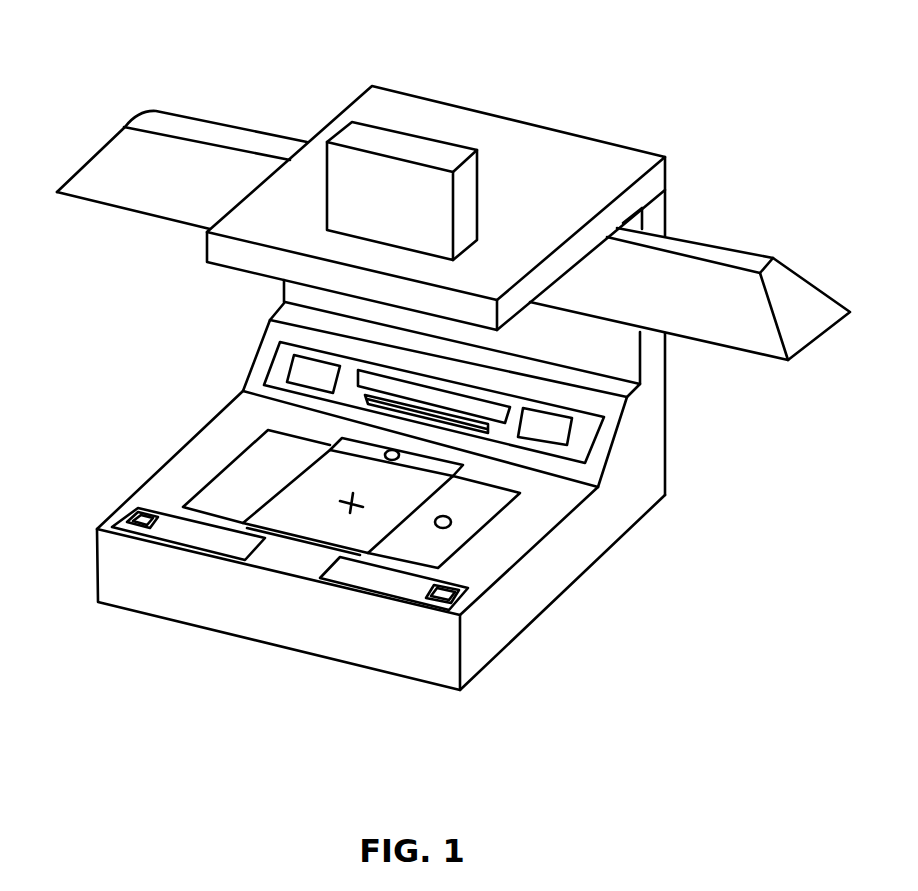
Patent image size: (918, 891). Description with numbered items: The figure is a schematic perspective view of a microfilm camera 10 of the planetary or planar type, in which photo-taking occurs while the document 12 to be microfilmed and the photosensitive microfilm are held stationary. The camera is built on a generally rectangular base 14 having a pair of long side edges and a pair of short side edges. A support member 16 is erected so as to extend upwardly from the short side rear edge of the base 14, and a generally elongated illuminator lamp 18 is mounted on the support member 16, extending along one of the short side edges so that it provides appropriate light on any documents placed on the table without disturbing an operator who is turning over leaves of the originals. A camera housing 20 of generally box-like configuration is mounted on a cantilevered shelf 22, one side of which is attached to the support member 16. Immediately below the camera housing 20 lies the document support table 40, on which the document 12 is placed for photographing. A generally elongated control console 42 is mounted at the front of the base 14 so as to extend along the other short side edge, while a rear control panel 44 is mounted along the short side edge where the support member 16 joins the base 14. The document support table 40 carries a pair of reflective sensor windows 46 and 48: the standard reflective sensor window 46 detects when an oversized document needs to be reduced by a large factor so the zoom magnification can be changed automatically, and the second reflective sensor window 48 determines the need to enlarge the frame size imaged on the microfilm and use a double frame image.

The microfilm camera 10 is at (326, 77).
The document 12 is at (338, 535).
The base 14 is at (547, 582).
The support member 16 is at (653, 358).
The illuminator lamp 18 is at (646, 298).
The camera housing 20 is at (373, 208).
The cantilevered shelf 22 is at (523, 204).
The document support table 40 is at (237, 482).
The control console 42 is at (180, 530).
The rear control panel 44 is at (242, 350).
The standard reflective sensor window 46 is at (390, 450).
The second reflective sensor window 48 is at (449, 527).